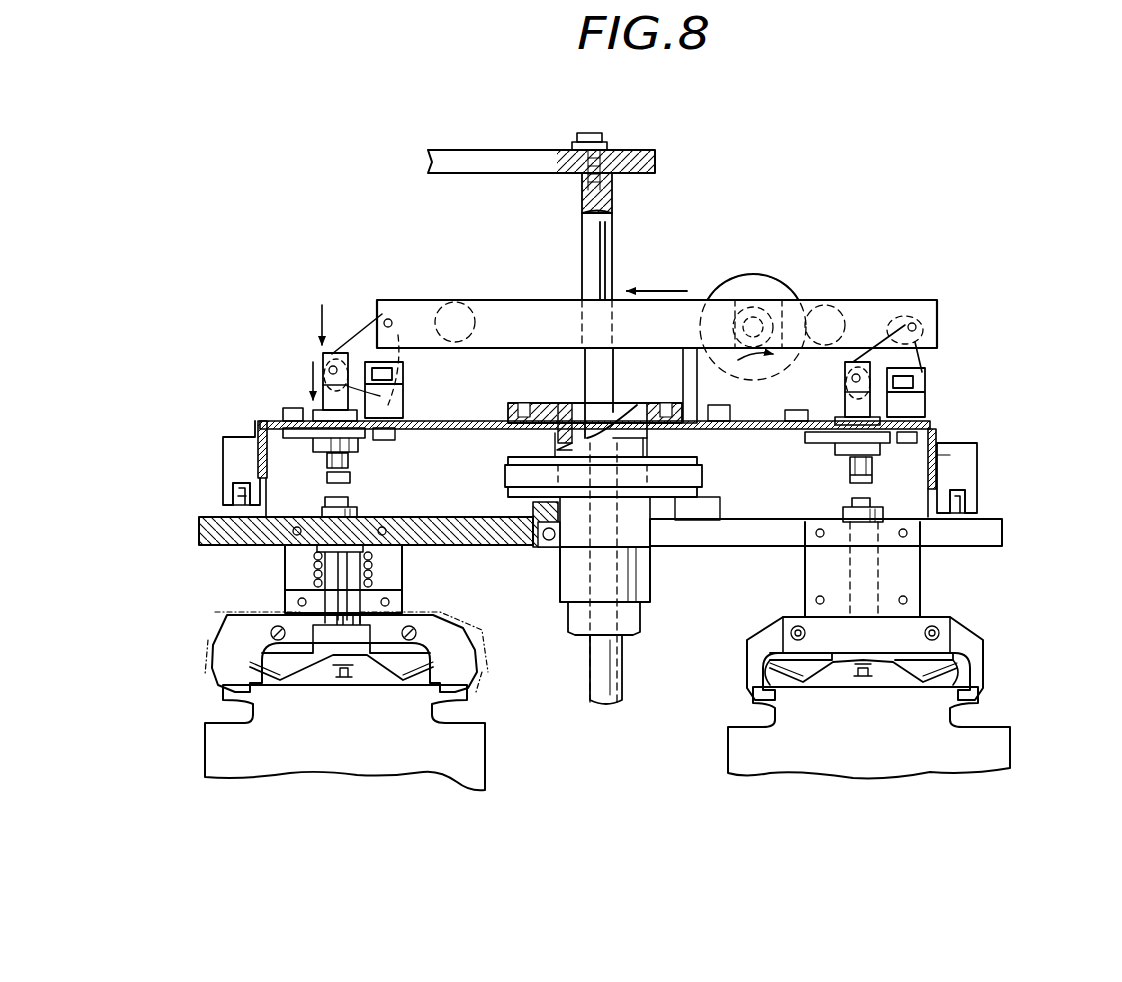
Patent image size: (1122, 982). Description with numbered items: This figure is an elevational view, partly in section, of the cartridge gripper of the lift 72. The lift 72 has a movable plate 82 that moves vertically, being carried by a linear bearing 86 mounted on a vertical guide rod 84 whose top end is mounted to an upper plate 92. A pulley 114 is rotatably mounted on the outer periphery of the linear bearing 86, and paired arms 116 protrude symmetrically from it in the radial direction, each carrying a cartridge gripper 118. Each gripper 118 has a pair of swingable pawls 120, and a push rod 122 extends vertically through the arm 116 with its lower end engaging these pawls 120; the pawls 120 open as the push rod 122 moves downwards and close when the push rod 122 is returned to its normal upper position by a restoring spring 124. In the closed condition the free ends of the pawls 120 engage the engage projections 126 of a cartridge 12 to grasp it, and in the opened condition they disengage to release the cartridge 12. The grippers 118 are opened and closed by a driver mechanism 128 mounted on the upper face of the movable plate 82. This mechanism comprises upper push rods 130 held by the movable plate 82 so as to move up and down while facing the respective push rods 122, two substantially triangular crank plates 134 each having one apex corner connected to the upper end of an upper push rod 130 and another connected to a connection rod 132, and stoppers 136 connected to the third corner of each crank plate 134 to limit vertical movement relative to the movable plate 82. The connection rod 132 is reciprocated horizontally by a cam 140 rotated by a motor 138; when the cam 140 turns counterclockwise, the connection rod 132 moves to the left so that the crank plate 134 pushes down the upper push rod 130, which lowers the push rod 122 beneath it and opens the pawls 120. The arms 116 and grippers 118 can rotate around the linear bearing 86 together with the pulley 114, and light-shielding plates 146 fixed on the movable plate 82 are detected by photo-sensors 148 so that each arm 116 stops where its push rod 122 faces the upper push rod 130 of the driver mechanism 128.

The cartridge 12 is at (487, 770).
The lift 72 is at (792, 166).
The movable plate 82 is at (936, 432).
The guide rod 84 is at (614, 244).
The linear bearing 86 is at (650, 572).
The upper plate 92 is at (657, 160).
The pulley 114 is at (690, 496).
The arm 116 is at (199, 532).
The cartridge gripper 118 is at (598, 687).
The swingable pawl 120 is at (240, 694).
The push rod 122 is at (357, 516).
The restoring spring 124 is at (285, 576).
The engage projection 126 is at (228, 700).
The driver mechanism 128 is at (865, 292).
The upper push rod 130 is at (313, 408).
The connection rod 132 is at (938, 322).
The crank plate 134 is at (334, 353).
The stopper 136 is at (392, 396).
The motor 138 is at (778, 278).
The cam 140 is at (745, 298).
The light-shielding plate 146 is at (238, 498).
The photo-sensor 148 is at (222, 457).